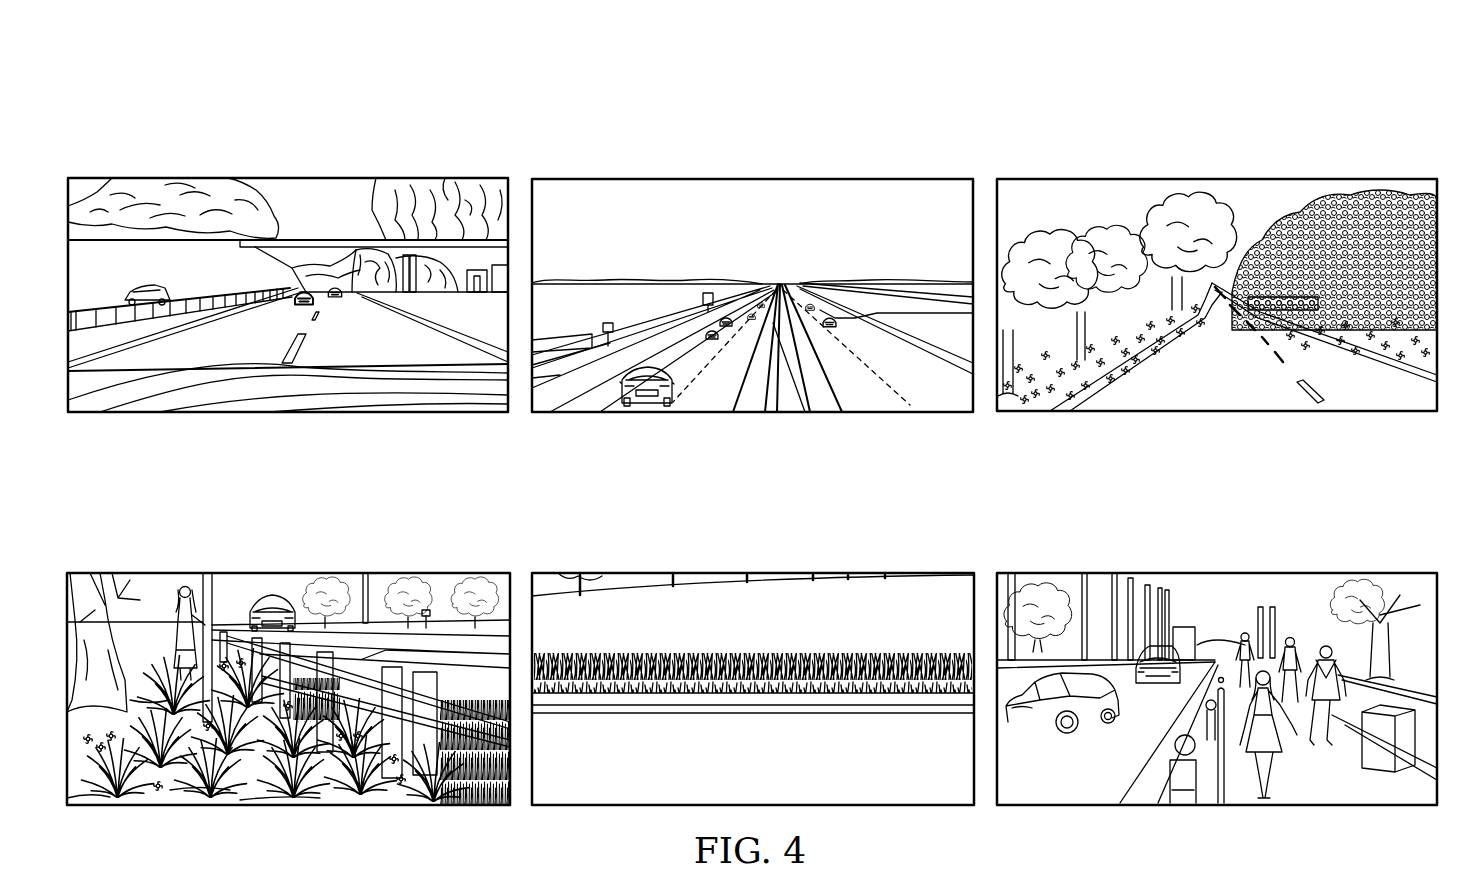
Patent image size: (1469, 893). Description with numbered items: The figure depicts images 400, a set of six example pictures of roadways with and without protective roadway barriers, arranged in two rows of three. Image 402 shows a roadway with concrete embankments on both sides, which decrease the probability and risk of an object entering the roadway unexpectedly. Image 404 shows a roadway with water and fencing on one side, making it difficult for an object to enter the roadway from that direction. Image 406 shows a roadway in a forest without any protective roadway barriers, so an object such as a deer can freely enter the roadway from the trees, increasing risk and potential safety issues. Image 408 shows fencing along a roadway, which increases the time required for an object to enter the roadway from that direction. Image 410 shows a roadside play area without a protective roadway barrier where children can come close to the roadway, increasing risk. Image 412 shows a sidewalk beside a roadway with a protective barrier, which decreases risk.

The images 400 is at (457, 130).
The image 402 is at (288, 178).
The image 404 is at (752, 178).
The image 406 is at (1232, 178).
The image 408 is at (278, 573).
The image 410 is at (768, 573).
The image 412 is at (1232, 573).